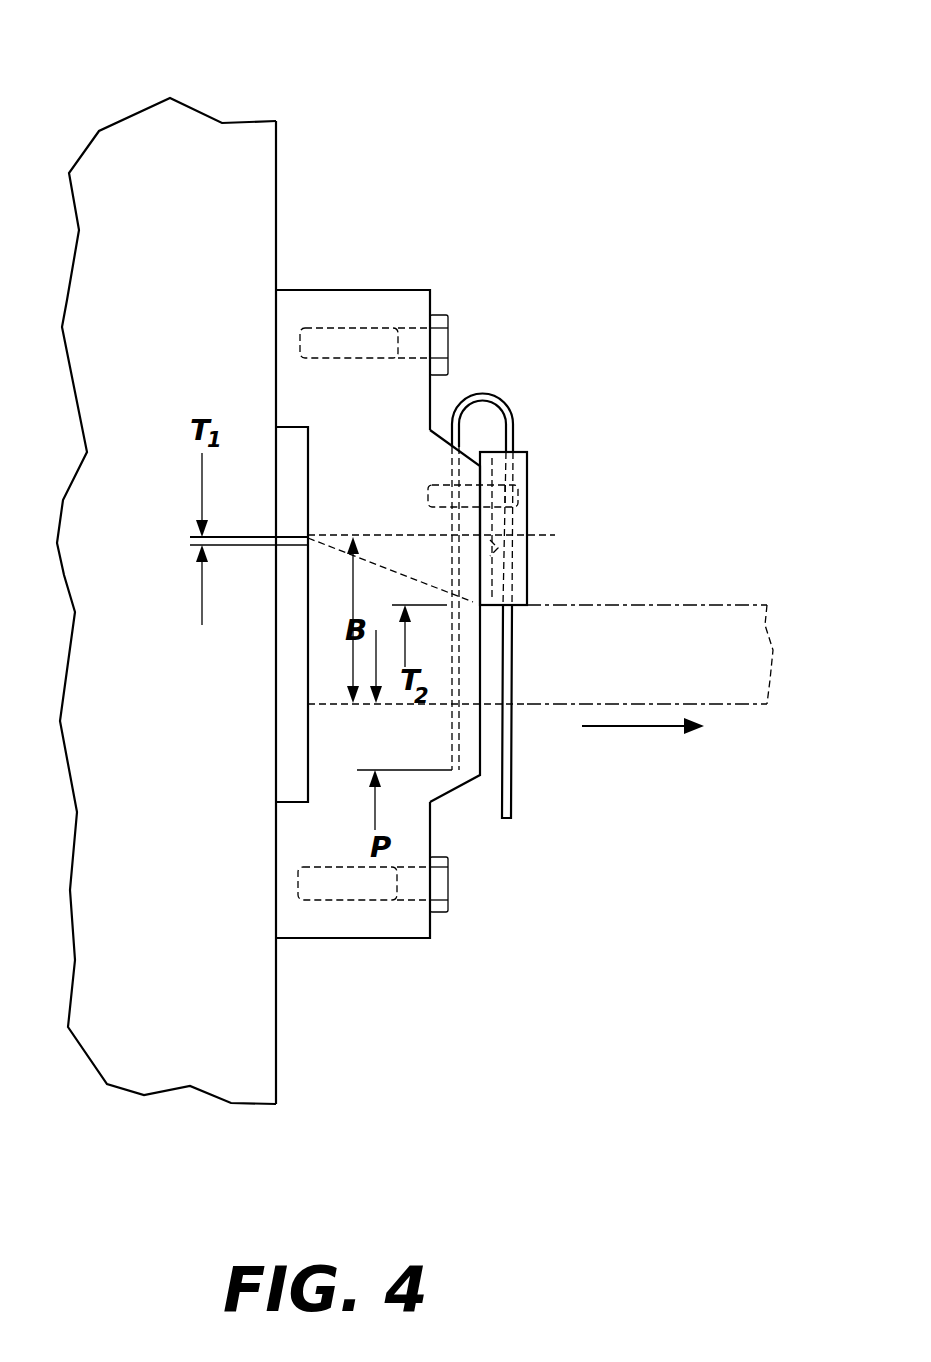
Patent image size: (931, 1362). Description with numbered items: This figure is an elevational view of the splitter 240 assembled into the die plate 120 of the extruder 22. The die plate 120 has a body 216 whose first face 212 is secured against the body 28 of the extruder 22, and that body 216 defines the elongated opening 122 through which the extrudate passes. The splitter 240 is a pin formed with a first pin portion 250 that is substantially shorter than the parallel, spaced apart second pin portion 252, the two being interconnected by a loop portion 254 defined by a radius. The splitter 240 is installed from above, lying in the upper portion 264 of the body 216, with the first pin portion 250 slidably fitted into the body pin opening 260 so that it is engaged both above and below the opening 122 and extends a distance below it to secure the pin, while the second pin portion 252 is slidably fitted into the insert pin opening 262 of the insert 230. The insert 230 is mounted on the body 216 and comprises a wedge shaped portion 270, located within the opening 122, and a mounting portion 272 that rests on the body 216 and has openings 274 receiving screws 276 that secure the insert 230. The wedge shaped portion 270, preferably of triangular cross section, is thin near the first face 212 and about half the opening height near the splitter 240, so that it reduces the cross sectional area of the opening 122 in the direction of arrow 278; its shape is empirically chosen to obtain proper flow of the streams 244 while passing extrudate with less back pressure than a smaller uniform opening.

The body 28 is at (170, 98).
The extruder 22 is at (228, 106).
The die plate 120 is at (494, 100).
The opening 122 is at (330, 664).
The first face 212 is at (274, 884).
The body 216 is at (345, 938).
The insert 230 is at (534, 578).
The splitter 240 is at (475, 600).
The streams 244 is at (740, 704).
The first pin portion 250 is at (450, 740).
The second pin portion 252 is at (513, 792).
The loop portion 254 is at (503, 400).
The body pin opening 260 is at (456, 452).
The insert pin opening 262 is at (463, 537).
The upper portion 264 is at (443, 422).
The wedge shaped portion 270 is at (383, 568).
The mounting portion 272 is at (478, 468).
The openings 274 is at (508, 426).
The screws 276 is at (527, 490).
The arrow 278 is at (640, 728).